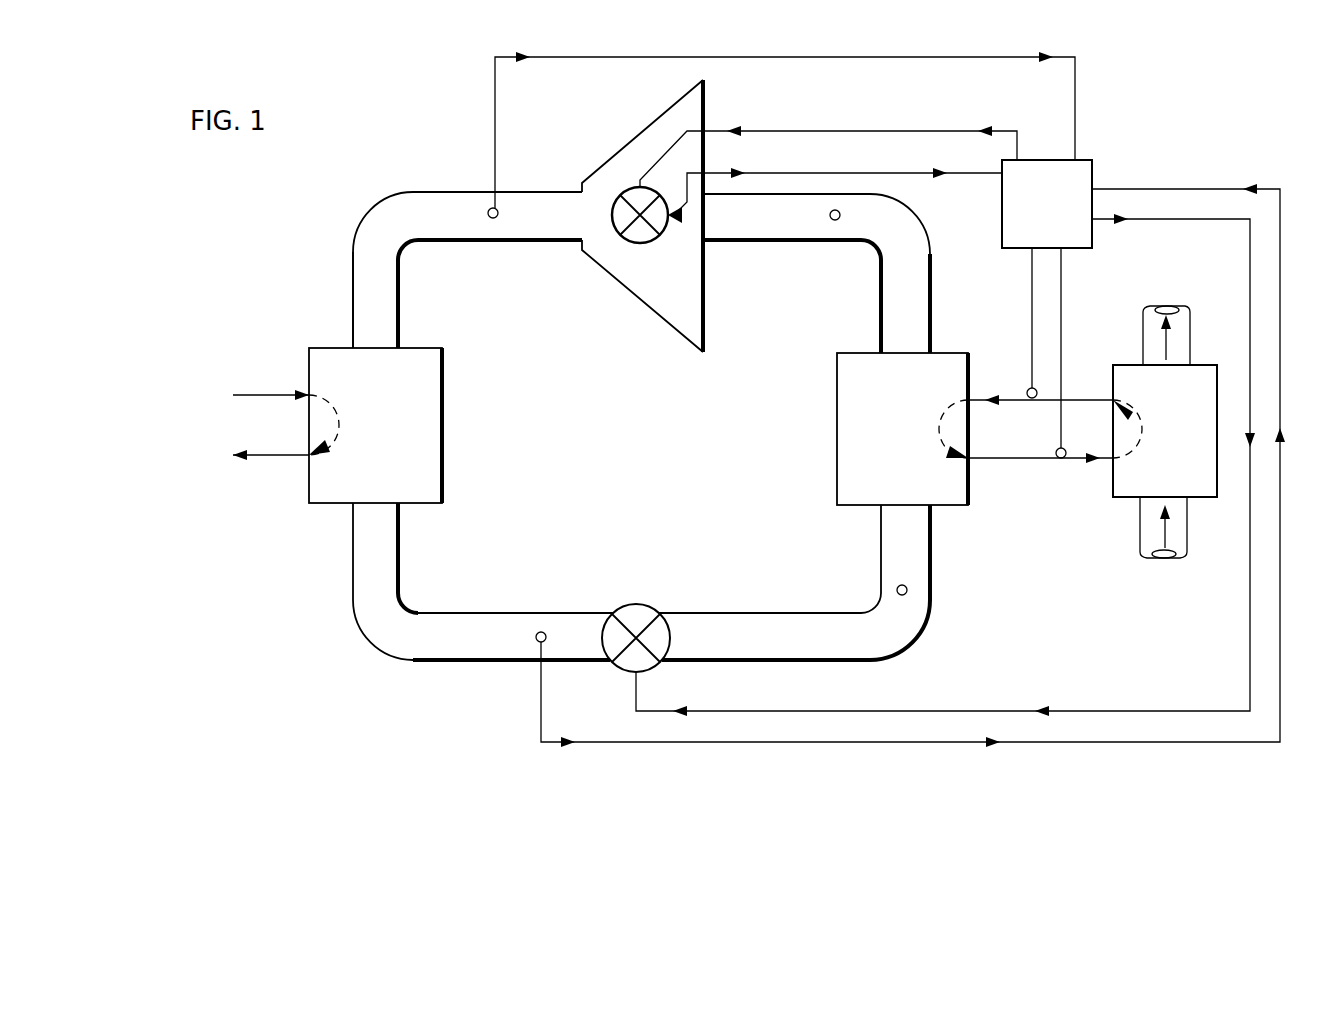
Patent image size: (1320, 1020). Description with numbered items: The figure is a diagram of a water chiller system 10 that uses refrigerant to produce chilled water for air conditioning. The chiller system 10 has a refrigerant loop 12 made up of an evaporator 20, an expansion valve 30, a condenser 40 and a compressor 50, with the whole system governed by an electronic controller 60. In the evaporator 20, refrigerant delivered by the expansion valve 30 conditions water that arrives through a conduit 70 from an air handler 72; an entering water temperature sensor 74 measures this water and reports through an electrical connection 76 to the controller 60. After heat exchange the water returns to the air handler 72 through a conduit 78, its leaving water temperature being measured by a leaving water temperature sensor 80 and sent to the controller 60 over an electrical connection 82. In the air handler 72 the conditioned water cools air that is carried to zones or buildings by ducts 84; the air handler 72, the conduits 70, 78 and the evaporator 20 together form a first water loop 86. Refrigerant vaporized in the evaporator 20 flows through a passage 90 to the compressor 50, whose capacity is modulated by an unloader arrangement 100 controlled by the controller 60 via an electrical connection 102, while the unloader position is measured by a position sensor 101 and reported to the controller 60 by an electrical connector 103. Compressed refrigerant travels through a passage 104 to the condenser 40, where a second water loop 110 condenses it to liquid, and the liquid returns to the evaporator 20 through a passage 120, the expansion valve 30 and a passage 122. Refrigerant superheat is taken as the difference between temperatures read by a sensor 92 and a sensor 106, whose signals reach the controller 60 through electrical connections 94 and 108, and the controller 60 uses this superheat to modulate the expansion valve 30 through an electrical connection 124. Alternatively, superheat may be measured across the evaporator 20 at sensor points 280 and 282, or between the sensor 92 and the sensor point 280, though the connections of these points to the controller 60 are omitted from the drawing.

The chiller system 10 is at (525, 345).
The refrigerant loop 12 is at (673, 492).
The evaporator 20 is at (907, 442).
The expansion valve 30 is at (640, 604).
The condenser 40 is at (384, 442).
The compressor 50 is at (625, 290).
The electronic controller 60 is at (1061, 218).
The conduit 70 is at (1082, 400).
The air handler 72 is at (1179, 440).
The entering water temperature sensor 74 is at (1027, 390).
The electrical connection 76 is at (1032, 305).
The conduit 78 is at (1035, 460).
The leaving water temperature sensor 80 is at (1060, 458).
The electrical connection 82 is at (1061, 310).
The ducts 84 is at (1190, 340).
The first water loop 86 is at (1108, 442).
The passage 90 is at (881, 290).
The sensor 92 is at (490, 218).
The electrical connection 94 is at (614, 57).
The unloader arrangement 100 is at (615, 203).
The position sensor 101 is at (676, 222).
The electrical connection 102 is at (876, 131).
The electrical connector 103 is at (780, 173).
The passage 104 is at (353, 280).
The sensor 106 is at (541, 632).
The electrical connection 108 is at (1188, 189).
The second water loop 110 is at (255, 395).
The passage 120 is at (492, 662).
The passage 122 is at (790, 662).
The electrical connection 124 is at (1160, 219).
The sensor point 280 is at (907, 590).
The sensor point 282 is at (840, 215).